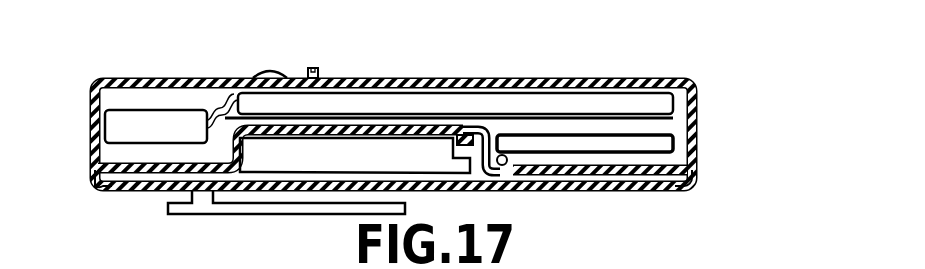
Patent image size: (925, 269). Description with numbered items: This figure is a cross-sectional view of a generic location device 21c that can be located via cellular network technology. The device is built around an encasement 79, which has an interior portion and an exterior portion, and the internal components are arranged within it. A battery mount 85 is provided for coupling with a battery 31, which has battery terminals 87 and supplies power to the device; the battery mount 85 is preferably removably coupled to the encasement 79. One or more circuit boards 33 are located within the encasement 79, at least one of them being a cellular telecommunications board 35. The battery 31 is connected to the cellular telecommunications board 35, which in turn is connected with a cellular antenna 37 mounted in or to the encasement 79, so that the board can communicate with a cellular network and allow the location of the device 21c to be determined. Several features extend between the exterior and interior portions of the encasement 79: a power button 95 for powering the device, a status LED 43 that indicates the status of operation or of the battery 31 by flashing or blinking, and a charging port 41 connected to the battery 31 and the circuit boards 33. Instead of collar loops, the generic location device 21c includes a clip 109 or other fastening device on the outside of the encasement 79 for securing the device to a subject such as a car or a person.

The generic location device 21c is at (399, 135).
The encasement 79 is at (697, 100).
The battery mount 85 is at (101, 190).
The power button 95 is at (265, 72).
The status LED 43 is at (313, 68).
The cellular telecommunications board 35 is at (397, 105).
The cellular antenna 37 is at (118, 127).
The circuit boards 33 is at (672, 107).
The battery terminals 87 is at (465, 140).
The battery 31 is at (443, 163).
The charging port 41 is at (505, 161).
The clip 109 is at (245, 213).